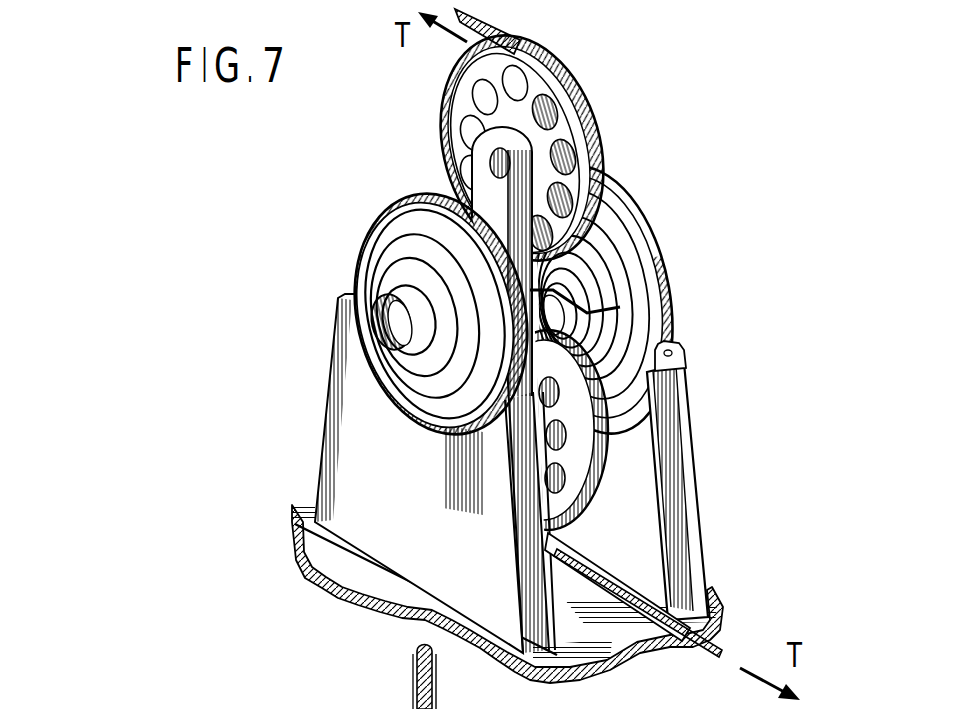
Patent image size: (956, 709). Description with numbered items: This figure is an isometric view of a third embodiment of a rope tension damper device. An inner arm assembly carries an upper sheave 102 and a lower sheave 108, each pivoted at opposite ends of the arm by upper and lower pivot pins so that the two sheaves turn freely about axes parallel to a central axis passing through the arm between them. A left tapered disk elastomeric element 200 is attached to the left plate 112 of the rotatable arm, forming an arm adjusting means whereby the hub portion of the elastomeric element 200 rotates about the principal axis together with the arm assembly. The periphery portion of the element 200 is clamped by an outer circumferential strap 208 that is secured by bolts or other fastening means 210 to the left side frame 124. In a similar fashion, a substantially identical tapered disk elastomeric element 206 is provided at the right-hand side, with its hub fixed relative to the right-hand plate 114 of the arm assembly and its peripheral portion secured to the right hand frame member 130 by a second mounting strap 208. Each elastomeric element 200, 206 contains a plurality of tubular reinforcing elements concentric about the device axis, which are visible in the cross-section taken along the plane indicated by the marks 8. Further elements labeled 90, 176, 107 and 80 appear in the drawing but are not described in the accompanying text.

The strap 90 is at (506, 40).
The pivot pin 176 is at (490, 160).
The outer circumferential strap 208 is at (433, 202).
The left tapered disk elastomeric element 200 is at (509, 280).
The upper sheave 102 is at (622, 184).
The tapered disk elastomeric element 206 is at (626, 300).
The right-hand plate 114 is at (557, 283).
The section line 8- 8 is at (292, 393).
The fastening means 210 is at (690, 351).
The right hand frame member 130 is at (700, 445).
The lower sheave 108 is at (578, 497).
The left side frame 124 is at (398, 558).
The left plate 112 is at (394, 677).
The pin sleeve 107 is at (437, 686).
The rod 80 is at (702, 655).